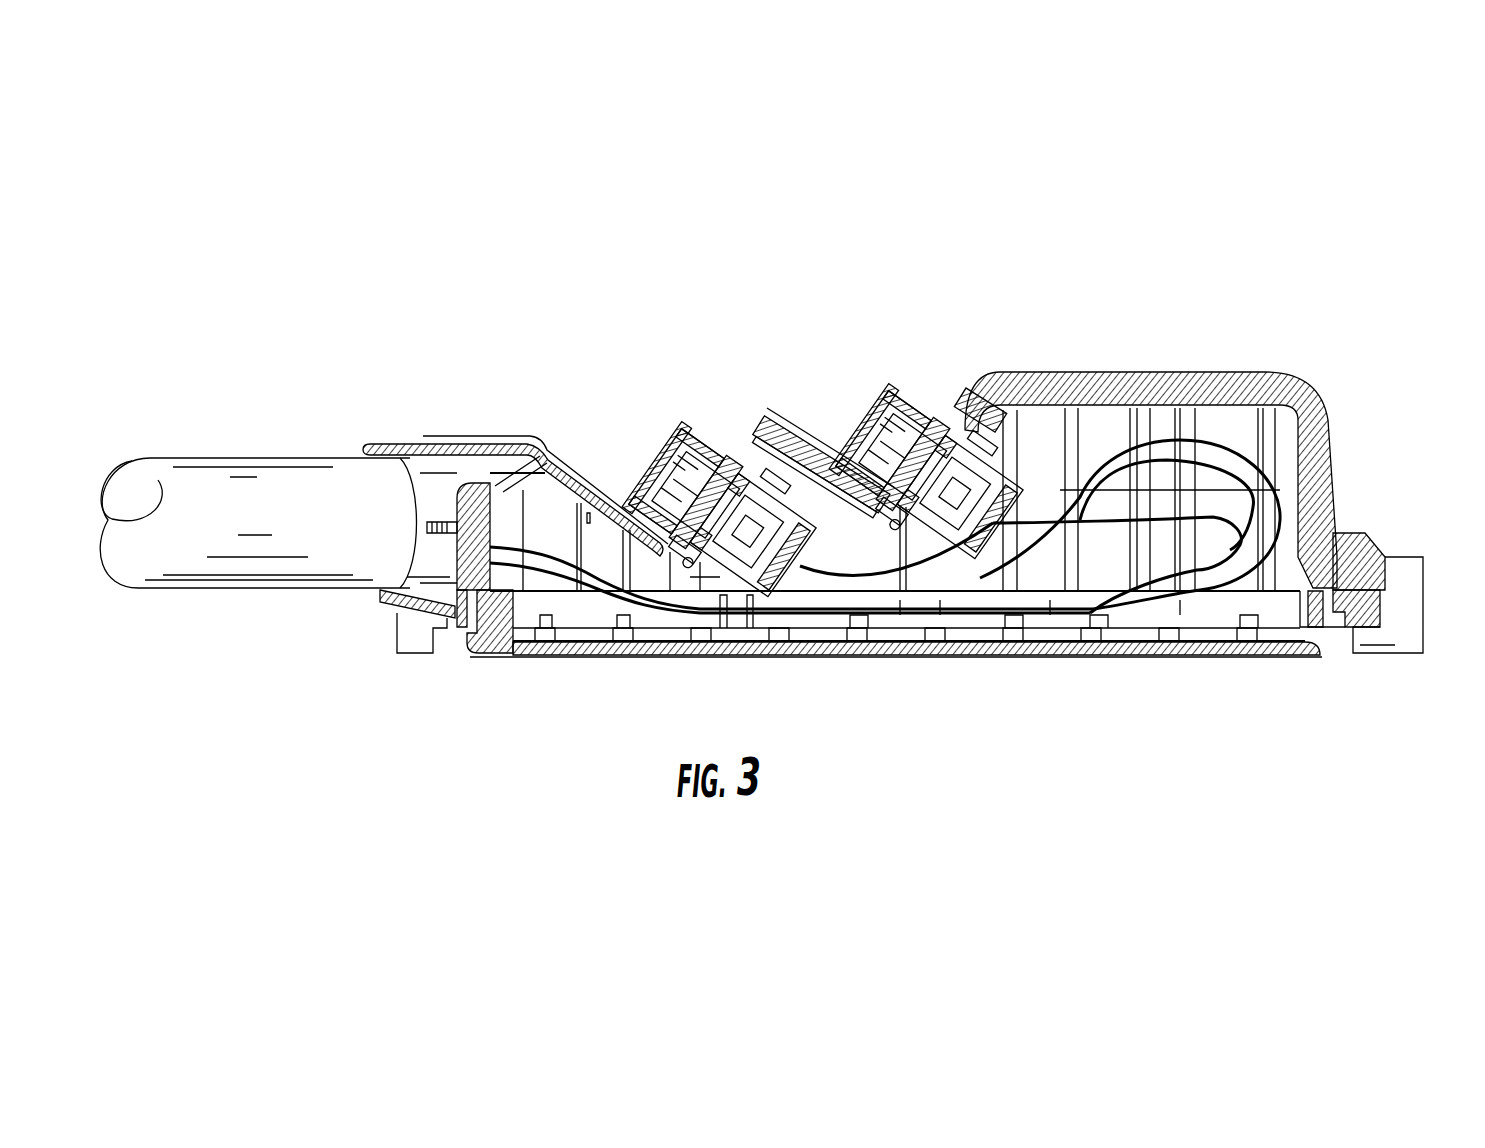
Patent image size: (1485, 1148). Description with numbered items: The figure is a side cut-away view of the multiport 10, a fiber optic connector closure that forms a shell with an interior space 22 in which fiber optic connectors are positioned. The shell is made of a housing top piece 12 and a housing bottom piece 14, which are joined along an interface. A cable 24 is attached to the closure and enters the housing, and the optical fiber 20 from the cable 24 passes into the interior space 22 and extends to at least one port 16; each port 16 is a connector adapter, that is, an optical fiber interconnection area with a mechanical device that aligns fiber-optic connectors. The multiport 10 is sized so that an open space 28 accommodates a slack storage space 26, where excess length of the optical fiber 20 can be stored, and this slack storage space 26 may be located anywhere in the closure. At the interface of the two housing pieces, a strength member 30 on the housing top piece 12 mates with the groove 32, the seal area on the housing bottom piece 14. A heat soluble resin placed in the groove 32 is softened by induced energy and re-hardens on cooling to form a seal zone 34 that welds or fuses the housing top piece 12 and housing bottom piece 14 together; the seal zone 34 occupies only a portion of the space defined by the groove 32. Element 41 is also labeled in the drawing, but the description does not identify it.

The multiport device 10 is at (1284, 309).
The housing top piece 12 is at (1325, 440).
The housing bottom piece 14 is at (915, 643).
The port 16 is at (697, 417).
The optical fiber 20 is at (548, 590).
The interior space 22 is at (562, 540).
The cable 24 is at (362, 446).
The slack storage space 26 is at (1171, 667).
The open space 28 is at (1117, 444).
The strength member 30 is at (1325, 632).
The groove 32 is at (1287, 653).
The seal zone 34 is at (465, 630).
The seal 41 is at (423, 438).